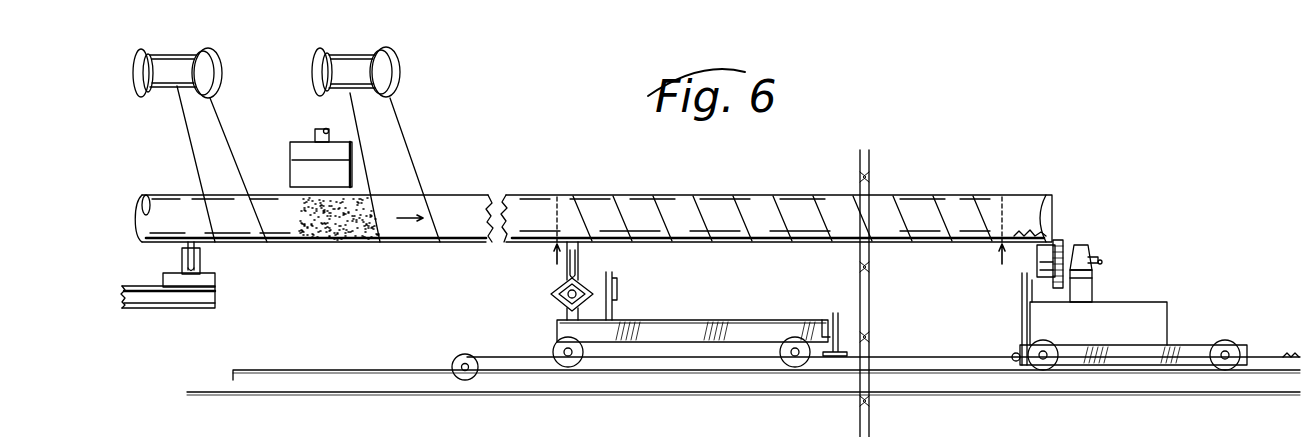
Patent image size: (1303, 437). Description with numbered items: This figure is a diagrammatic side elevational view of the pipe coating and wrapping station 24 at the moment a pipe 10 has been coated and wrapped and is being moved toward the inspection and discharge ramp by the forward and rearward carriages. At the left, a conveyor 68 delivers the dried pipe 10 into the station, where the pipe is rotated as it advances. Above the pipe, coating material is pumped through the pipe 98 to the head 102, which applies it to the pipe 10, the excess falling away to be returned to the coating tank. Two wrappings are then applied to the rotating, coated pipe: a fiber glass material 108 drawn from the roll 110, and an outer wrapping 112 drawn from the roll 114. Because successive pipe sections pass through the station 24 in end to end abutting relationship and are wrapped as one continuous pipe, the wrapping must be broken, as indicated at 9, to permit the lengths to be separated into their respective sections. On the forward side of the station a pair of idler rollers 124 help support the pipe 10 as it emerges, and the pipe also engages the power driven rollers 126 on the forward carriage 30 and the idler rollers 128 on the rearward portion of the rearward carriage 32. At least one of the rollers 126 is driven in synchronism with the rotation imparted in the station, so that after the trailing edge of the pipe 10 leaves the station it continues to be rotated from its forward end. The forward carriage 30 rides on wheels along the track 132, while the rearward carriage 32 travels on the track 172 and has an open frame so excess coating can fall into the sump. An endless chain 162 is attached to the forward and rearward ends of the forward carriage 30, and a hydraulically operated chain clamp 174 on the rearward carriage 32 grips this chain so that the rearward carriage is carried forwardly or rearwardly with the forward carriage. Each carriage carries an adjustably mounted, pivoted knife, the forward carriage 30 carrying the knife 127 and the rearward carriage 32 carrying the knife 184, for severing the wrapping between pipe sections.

The pipe 10 is at (440, 186).
The wrapping break 9 is at (493, 184).
The pipe coating and wrapping station 24 is at (260, 94).
The forward carriage 30 is at (1195, 341).
The rearward carriage 32 is at (744, 312).
The conveyor 68 is at (158, 298).
The pipe 98 is at (321, 130).
The head 102 is at (290, 150).
The fiber glass material 108 is at (190, 136).
The roll 110 is at (214, 70).
The outer wrapping 112 is at (384, 117).
The roll 114 is at (394, 71).
The idler rollers 124 is at (200, 264).
The power driven rollers 126 is at (1090, 276).
The knife 127 is at (1000, 254).
The idler rollers 128 is at (586, 250).
The track 132 is at (995, 387).
The endless chain 162 is at (521, 355).
The track 172 is at (561, 386).
The chain clamp 174 is at (847, 324).
The knife 184 is at (550, 258).